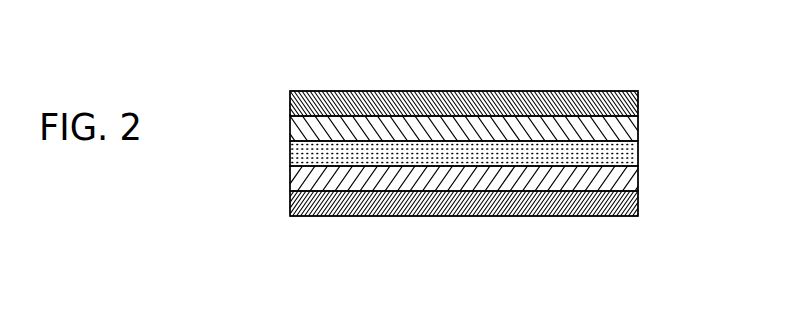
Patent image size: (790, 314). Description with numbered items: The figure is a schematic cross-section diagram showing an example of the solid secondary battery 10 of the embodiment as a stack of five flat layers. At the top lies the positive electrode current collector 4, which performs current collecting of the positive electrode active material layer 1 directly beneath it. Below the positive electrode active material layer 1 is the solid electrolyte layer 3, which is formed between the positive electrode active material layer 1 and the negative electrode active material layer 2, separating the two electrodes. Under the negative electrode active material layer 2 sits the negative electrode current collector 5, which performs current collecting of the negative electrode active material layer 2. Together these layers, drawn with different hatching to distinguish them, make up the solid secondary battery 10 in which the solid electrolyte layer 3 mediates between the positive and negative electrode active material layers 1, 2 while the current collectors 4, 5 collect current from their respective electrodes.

The solid secondary battery 10 is at (644, 70).
The positive electrode current collector 4 is at (638, 102).
The positive electrode active material layer 1 is at (638, 128).
The solid electrolyte layer 3 is at (638, 152).
The negative electrode active material layer 2 is at (638, 178).
The negative electrode current collector 5 is at (638, 202).